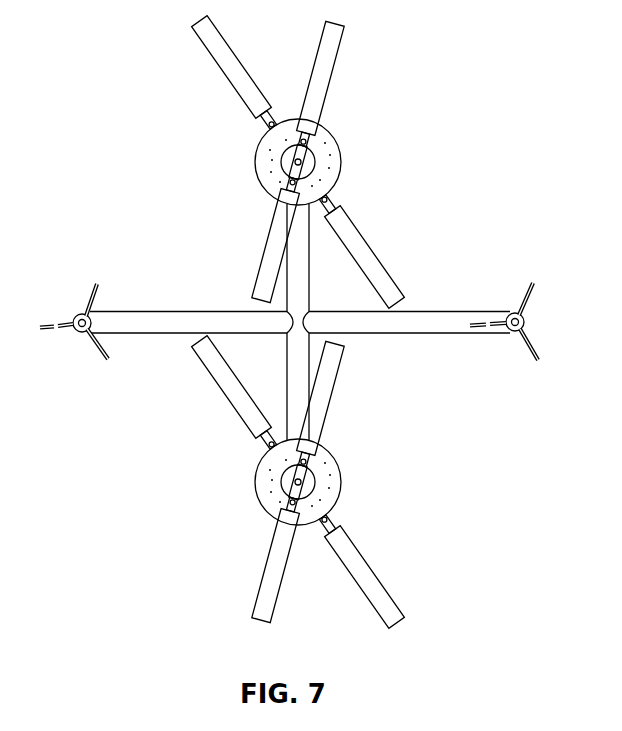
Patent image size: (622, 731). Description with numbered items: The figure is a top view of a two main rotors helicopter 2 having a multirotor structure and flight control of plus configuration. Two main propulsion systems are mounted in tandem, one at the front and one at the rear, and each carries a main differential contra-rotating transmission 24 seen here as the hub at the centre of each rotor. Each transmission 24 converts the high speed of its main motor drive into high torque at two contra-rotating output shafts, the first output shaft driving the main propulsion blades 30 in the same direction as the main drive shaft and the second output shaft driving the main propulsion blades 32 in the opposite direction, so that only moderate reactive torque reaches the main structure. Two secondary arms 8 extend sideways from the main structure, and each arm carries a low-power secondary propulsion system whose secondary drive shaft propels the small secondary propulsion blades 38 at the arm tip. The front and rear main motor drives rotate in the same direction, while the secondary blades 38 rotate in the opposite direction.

The helicopter with a multirotor structure and flight control 2 is at (443, 173).
The secondary arm 8 is at (148, 320).
The main differential contra-rotating transmission 24 is at (242, 168).
The main propulsion blade 30 is at (325, 62).
The main propulsion blade 32 is at (217, 53).
The secondary propulsion blade 38 is at (95, 288).